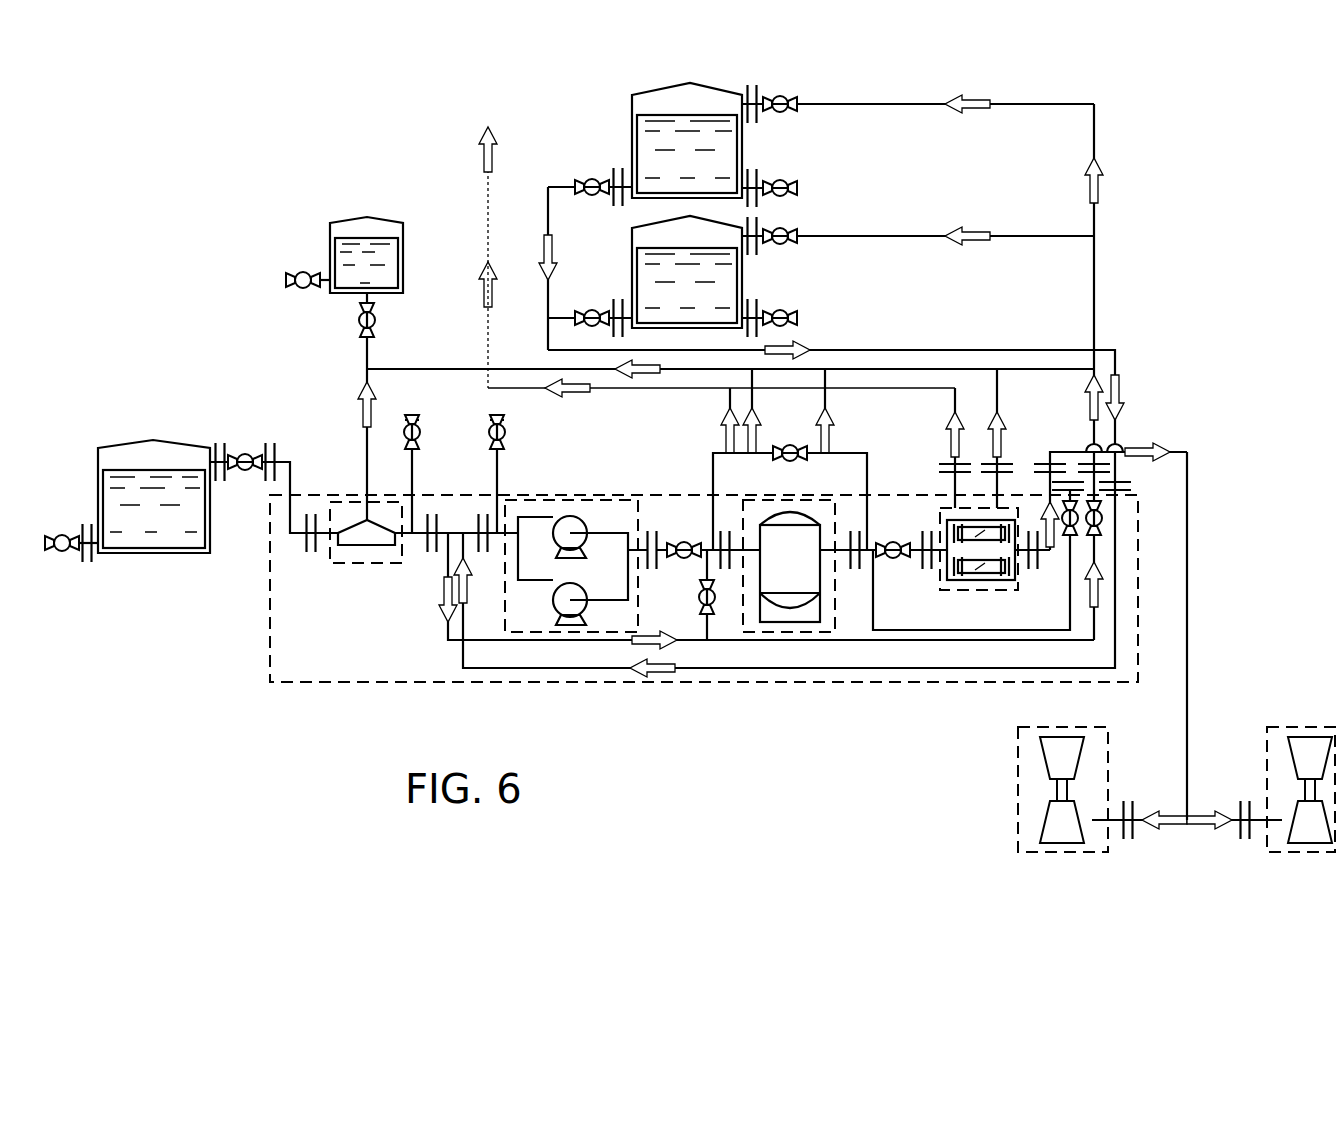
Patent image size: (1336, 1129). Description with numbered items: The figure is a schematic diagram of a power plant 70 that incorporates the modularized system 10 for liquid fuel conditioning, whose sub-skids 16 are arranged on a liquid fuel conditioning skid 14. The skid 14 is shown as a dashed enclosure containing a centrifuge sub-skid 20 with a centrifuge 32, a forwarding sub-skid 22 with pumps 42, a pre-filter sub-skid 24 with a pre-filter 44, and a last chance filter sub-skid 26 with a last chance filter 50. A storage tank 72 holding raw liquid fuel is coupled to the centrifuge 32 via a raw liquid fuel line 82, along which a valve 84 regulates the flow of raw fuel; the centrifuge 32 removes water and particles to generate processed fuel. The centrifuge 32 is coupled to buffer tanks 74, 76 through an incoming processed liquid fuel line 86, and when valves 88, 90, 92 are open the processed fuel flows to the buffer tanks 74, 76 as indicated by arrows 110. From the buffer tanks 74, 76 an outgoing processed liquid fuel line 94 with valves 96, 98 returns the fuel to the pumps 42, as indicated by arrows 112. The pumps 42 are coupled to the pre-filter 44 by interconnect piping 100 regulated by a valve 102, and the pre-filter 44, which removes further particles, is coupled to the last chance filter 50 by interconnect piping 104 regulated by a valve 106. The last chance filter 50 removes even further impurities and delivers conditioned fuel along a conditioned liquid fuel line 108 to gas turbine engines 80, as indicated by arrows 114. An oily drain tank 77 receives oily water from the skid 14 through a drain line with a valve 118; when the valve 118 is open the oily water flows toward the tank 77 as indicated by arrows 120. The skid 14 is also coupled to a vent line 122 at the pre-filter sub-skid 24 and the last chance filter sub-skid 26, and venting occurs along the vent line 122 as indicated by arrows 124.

The modularized system 10 is at (372, 705).
The liquid fuel conditioning skid 14 is at (325, 682).
The sub-skids 16 is at (405, 369).
The centrifuge sub-skid 20 is at (340, 500).
The forwarding sub-skid 22 is at (580, 498).
The pre-filter sub-skid 24 is at (810, 498).
The last chance filter sub-skid 26 is at (983, 590).
The centrifuge 32 is at (380, 525).
The pumps 42 is at (585, 520).
The pre-filter 44 is at (820, 575).
The last chance filter 50 is at (955, 530).
The power plant 70 is at (1102, 92).
The storage tank 72 is at (98, 500).
The buffer tank 74 is at (740, 225).
The buffer tank 76 is at (740, 92).
The oily drain tank 77 is at (330, 258).
The gas turbine engines 80 is at (1062, 727).
The raw liquid fuel line 82 is at (288, 490).
The valve 84 is at (245, 455).
The incoming processed liquid fuel line 86 is at (1095, 265).
The valve 88 is at (1103, 522).
The valve 90 is at (782, 113).
The valve 92 is at (782, 245).
The outgoing processed liquid fuel line 94 is at (548, 187).
The valve 96 is at (592, 178).
The valve 98 is at (592, 309).
The interconnect piping 100 is at (710, 560).
The valve 102 is at (684, 541).
The interconnect piping 104 is at (915, 560).
The valve 106 is at (893, 541).
The conditioned liquid fuel line 108 is at (1190, 495).
The arrows 110 is at (965, 100).
The arrows 112 is at (545, 250).
The arrows 114 is at (1043, 515).
The valve 118 is at (380, 322).
The arrows 120 is at (360, 410).
The vent line 122 is at (485, 218).
The arrows 124 is at (485, 295).